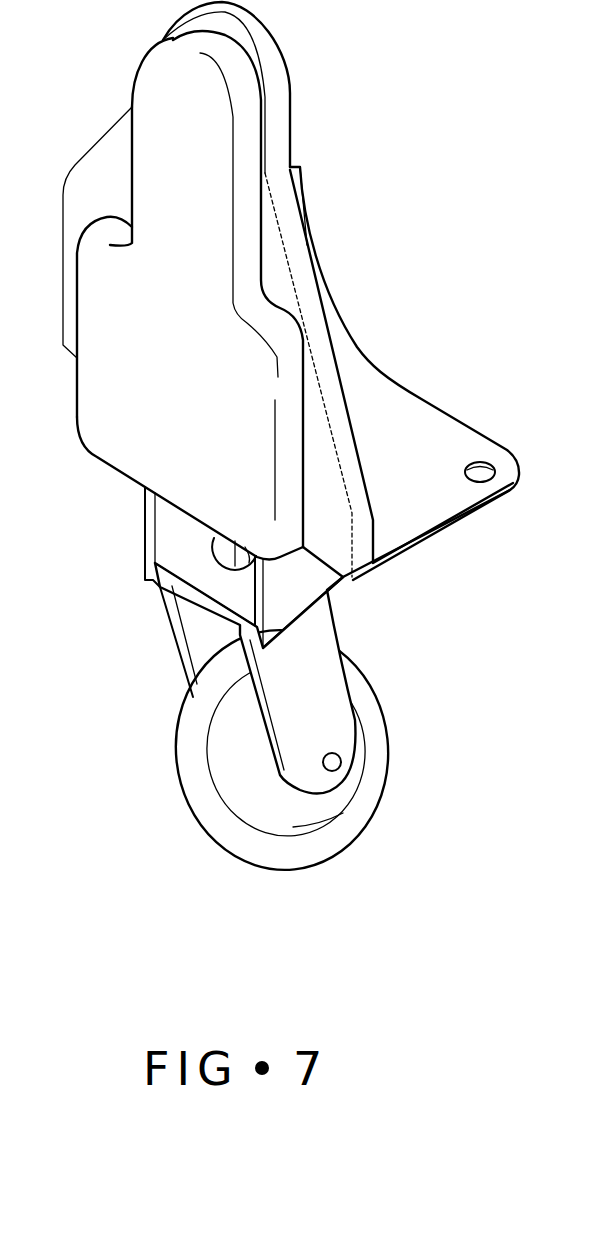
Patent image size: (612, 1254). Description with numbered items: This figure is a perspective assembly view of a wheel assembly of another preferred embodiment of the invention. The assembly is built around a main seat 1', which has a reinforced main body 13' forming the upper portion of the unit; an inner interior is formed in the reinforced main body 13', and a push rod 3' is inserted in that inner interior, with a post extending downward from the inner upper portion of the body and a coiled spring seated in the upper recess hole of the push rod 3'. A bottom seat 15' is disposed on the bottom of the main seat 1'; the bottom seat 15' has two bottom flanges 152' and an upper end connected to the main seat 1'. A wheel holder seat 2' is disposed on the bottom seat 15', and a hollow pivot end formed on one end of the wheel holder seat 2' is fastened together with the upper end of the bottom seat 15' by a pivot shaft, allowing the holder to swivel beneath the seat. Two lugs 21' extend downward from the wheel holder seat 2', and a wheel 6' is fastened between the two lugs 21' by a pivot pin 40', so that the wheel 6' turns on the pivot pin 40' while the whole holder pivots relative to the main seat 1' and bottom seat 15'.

The reinforced main body 13' is at (169, 281).
The main seat 1' is at (392, 373).
The bottom seat 15' is at (386, 569).
The push rod 3' is at (176, 551).
The bottom flanges 152' is at (180, 567).
The wheel holder seat 2' is at (246, 678).
The lugs 21' is at (314, 750).
The pivot pin 40' is at (383, 757).
The wheel 6' is at (282, 775).